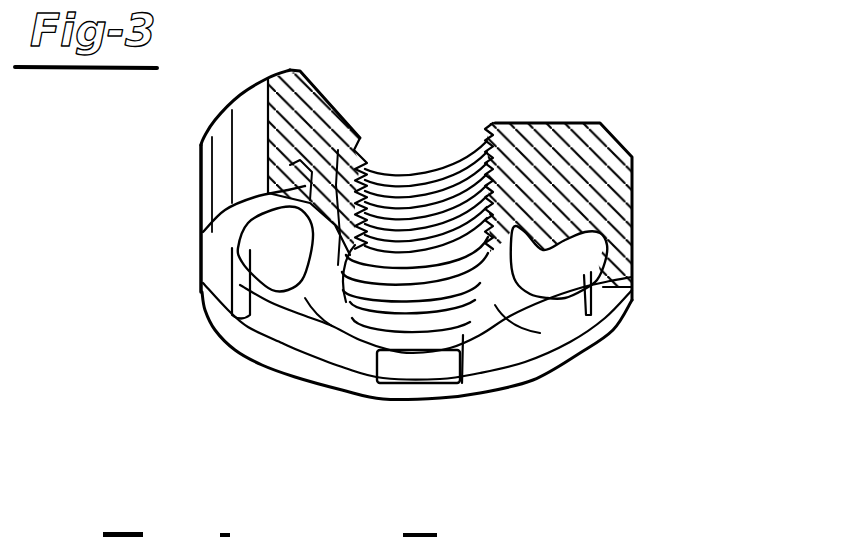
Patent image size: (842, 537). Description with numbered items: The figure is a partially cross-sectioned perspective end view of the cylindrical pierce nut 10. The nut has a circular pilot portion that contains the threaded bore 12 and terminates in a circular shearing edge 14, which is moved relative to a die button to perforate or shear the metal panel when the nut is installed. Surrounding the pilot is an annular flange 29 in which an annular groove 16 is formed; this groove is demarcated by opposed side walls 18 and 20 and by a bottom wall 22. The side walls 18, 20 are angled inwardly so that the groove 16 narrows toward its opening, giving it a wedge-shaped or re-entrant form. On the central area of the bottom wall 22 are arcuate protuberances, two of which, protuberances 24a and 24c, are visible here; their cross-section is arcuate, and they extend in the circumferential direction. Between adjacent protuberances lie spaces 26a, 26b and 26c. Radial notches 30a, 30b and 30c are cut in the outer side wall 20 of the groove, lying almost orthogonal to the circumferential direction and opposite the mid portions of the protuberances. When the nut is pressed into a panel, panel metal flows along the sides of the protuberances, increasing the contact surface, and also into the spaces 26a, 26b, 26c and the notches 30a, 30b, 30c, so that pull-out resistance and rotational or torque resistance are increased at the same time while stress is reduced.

The pierce nut 10 is at (650, 121).
The threaded bore 12 is at (427, 198).
The shearing edge 14 is at (482, 333).
The annular groove 16 is at (537, 310).
The side wall 18 is at (383, 167).
The side wall 20 is at (263, 313).
The bottom wall 22 is at (291, 162).
The arcuate protuberance 24a is at (547, 253).
The arcuate protuberance 24c is at (278, 242).
The space between protuberances 26a is at (540, 333).
The space between protuberances 26b is at (305, 300).
The space between protuberances 26c is at (339, 150).
The annular flange 29 is at (263, 203).
The radial notch 30a is at (600, 280).
The radial notch 30b is at (418, 363).
The radial notch 30c is at (232, 292).